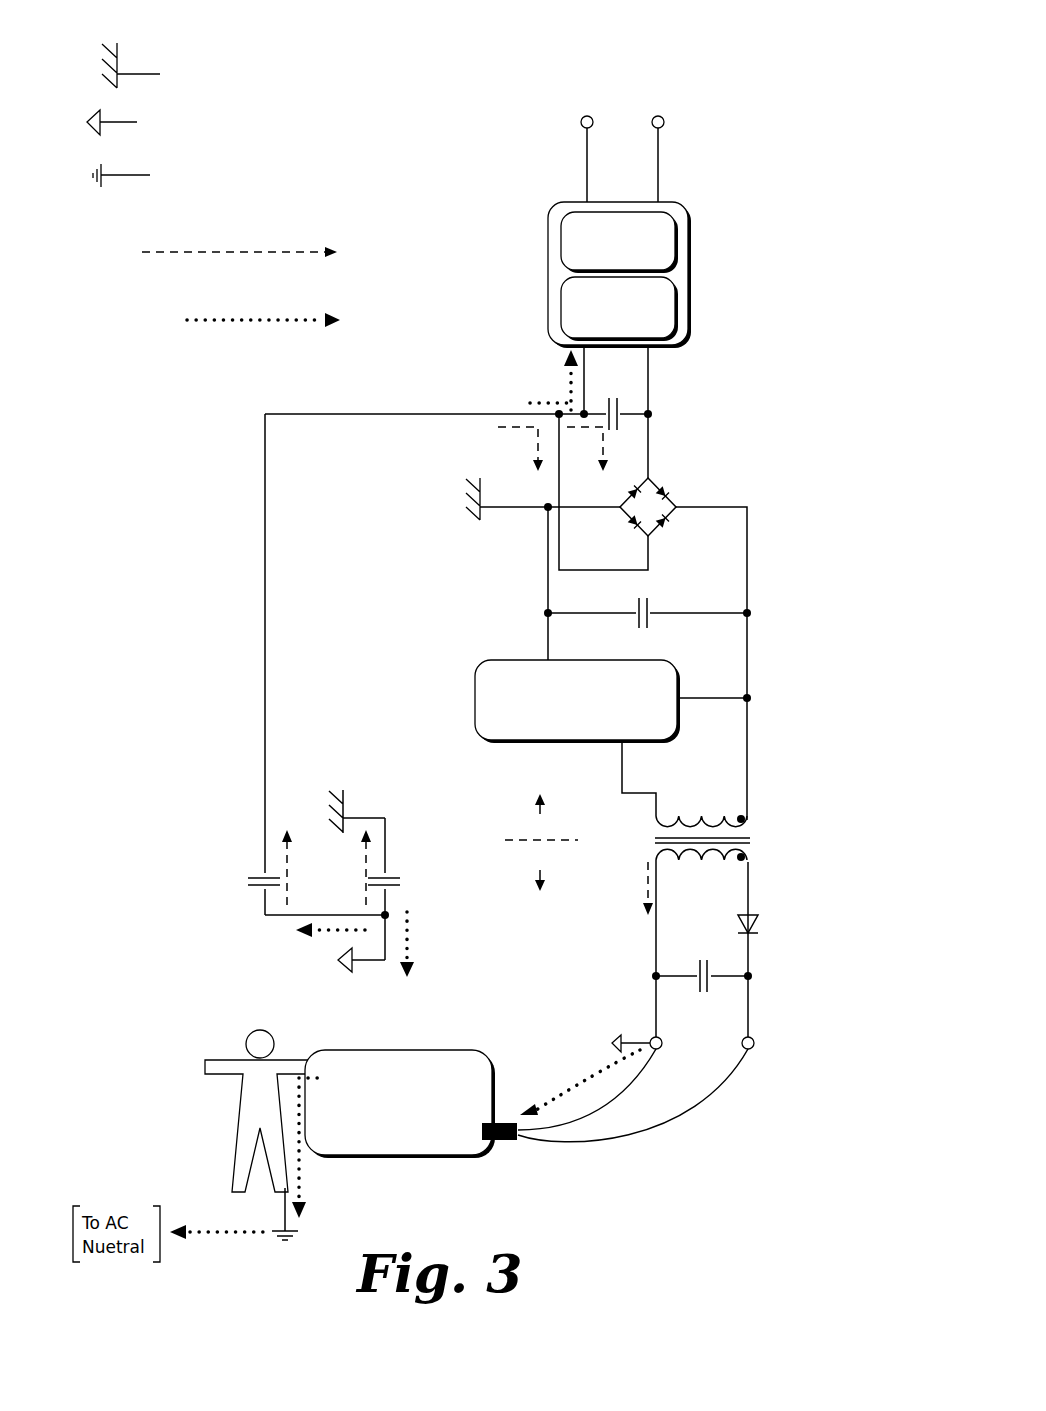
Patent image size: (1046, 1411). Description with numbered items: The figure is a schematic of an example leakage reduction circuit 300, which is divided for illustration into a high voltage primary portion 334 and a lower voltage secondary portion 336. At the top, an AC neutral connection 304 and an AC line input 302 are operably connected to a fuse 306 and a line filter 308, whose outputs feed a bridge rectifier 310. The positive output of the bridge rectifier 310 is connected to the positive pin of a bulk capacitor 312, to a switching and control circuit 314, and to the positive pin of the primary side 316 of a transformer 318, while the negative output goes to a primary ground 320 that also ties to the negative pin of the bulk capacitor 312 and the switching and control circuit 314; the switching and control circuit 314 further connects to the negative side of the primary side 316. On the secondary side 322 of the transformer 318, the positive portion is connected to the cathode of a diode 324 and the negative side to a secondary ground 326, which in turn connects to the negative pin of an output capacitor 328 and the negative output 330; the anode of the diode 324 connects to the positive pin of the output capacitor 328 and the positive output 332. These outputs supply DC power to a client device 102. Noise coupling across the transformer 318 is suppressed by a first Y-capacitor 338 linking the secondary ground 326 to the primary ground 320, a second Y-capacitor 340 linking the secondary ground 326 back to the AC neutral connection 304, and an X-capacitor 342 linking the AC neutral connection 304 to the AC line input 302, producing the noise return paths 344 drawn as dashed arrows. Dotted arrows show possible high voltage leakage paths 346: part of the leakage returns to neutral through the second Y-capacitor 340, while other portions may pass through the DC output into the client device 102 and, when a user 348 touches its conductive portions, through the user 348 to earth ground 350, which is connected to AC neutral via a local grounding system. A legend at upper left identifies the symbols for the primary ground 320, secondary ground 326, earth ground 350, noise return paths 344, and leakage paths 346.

The leakage reduction circuit 300 is at (137, 42).
The AC line input 302 is at (662, 117).
The AC neutral connection 304 is at (583, 117).
The fuse 306 is at (619, 242).
The line filter 308 is at (619, 309).
The bridge rectifier 310 is at (660, 494).
The bulk capacitor 312 is at (645, 598).
The switching and control circuit 314 is at (577, 701).
The primary side 316 is at (701, 808).
The transformer 318 is at (755, 821).
The primary ground 320 is at (221, 65).
The secondary side 322 is at (701, 867).
The diode 324 is at (756, 915).
The secondary ground 326 is at (212, 122).
The output capacitor 328 is at (705, 958).
The negative output 330 is at (662, 1050).
The positive output 332 is at (754, 1050).
The primary portion 334 is at (541, 817).
The secondary portion 336 is at (541, 869).
The first Y-capacitor 338 is at (400, 878).
The second Y-capacitor 340 is at (250, 878).
The X-capacitor 342 is at (613, 398).
The noise return paths 344 is at (236, 237).
The high voltage leakage paths 346 is at (257, 306).
The user 348 is at (257, 1030).
The earth ground 350 is at (215, 175).
The client device 102 is at (411, 1104).